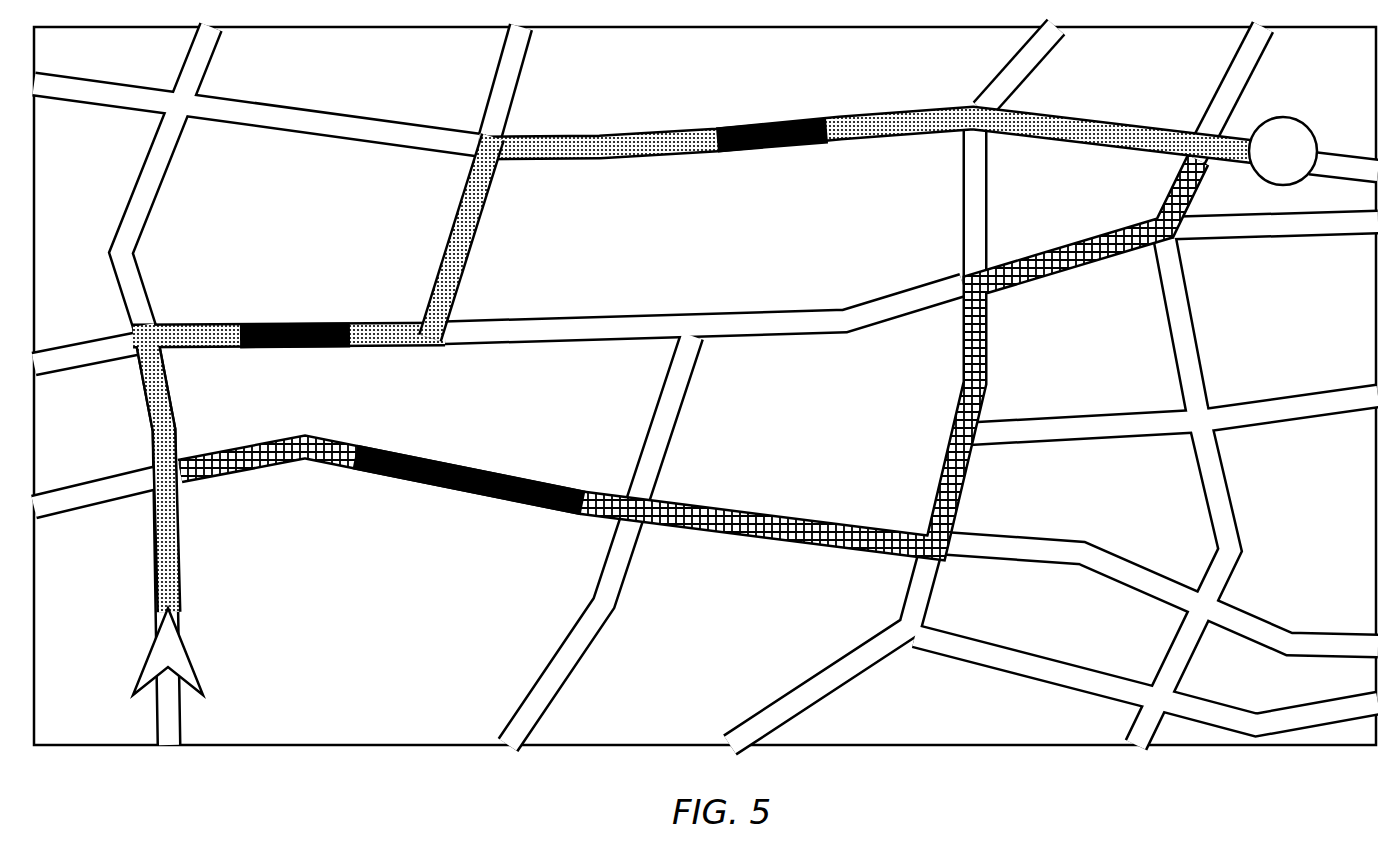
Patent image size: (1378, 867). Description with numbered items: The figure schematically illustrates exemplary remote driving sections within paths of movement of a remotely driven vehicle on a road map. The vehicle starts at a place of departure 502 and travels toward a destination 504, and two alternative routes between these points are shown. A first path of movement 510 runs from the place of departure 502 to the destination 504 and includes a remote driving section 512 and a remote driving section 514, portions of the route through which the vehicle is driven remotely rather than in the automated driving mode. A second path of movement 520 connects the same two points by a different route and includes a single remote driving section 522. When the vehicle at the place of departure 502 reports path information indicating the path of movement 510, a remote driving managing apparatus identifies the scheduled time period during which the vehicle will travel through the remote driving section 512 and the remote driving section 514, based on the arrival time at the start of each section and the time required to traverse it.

The place of departure 502 is at (192, 660).
The destination 504 is at (1320, 107).
The path of movement 510 is at (466, 265).
The remote driving section 512 is at (302, 311).
The remote driving section 514 is at (777, 106).
The path of movement 520 is at (768, 498).
The remote driving section 522 is at (487, 445).